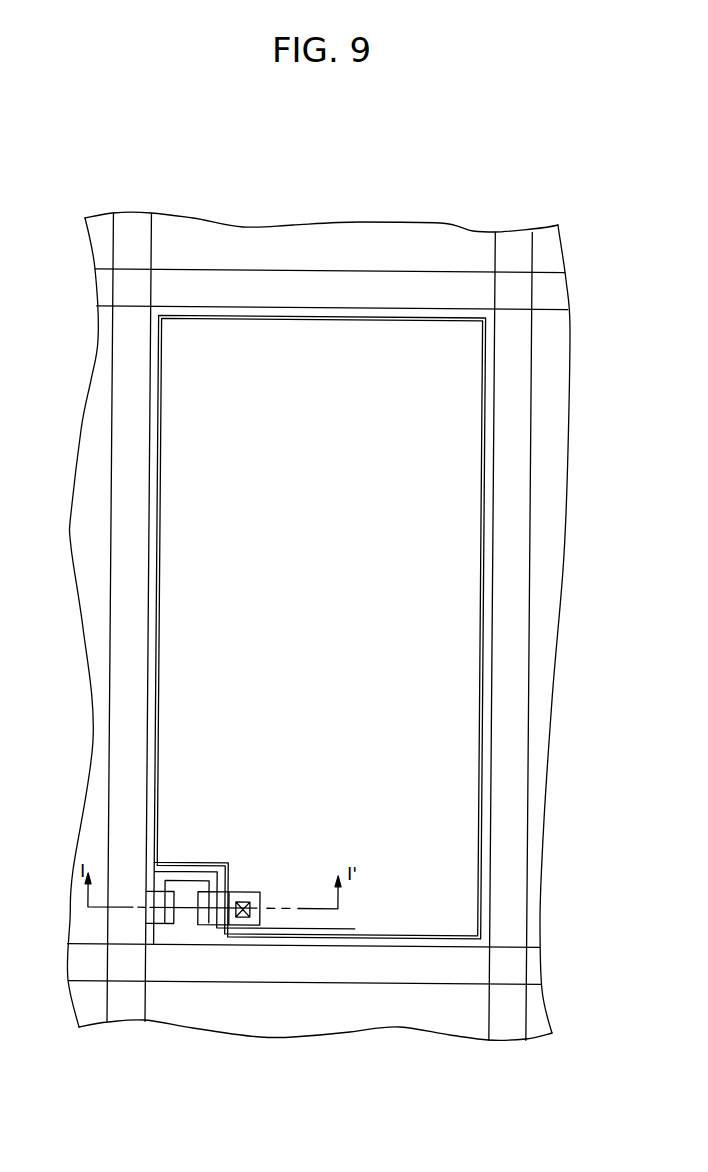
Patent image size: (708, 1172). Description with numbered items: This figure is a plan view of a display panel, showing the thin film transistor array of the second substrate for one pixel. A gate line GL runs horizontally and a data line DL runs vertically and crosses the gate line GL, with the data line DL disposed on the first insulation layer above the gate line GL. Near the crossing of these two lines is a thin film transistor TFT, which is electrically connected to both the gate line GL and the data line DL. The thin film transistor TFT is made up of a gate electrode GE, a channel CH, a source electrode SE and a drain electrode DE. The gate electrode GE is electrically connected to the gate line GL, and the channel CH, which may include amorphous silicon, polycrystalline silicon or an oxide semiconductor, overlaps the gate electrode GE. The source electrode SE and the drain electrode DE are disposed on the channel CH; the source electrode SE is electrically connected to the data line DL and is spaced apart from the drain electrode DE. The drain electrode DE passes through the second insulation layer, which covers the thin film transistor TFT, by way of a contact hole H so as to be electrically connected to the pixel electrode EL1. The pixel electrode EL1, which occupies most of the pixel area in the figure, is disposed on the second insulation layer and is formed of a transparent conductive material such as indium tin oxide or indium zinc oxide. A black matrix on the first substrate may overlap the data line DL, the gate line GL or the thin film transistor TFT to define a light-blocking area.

The data line DL is at (120, 694).
The gate line GL is at (326, 968).
The pixel electrode EL1 is at (432, 566).
The thin film transistor TFT is at (219, 981).
The gate electrode GE is at (185, 925).
The source electrode SE is at (152, 917).
The channel CH is at (166, 924).
The drain electrode DE is at (211, 924).
The contact hole H is at (245, 900).